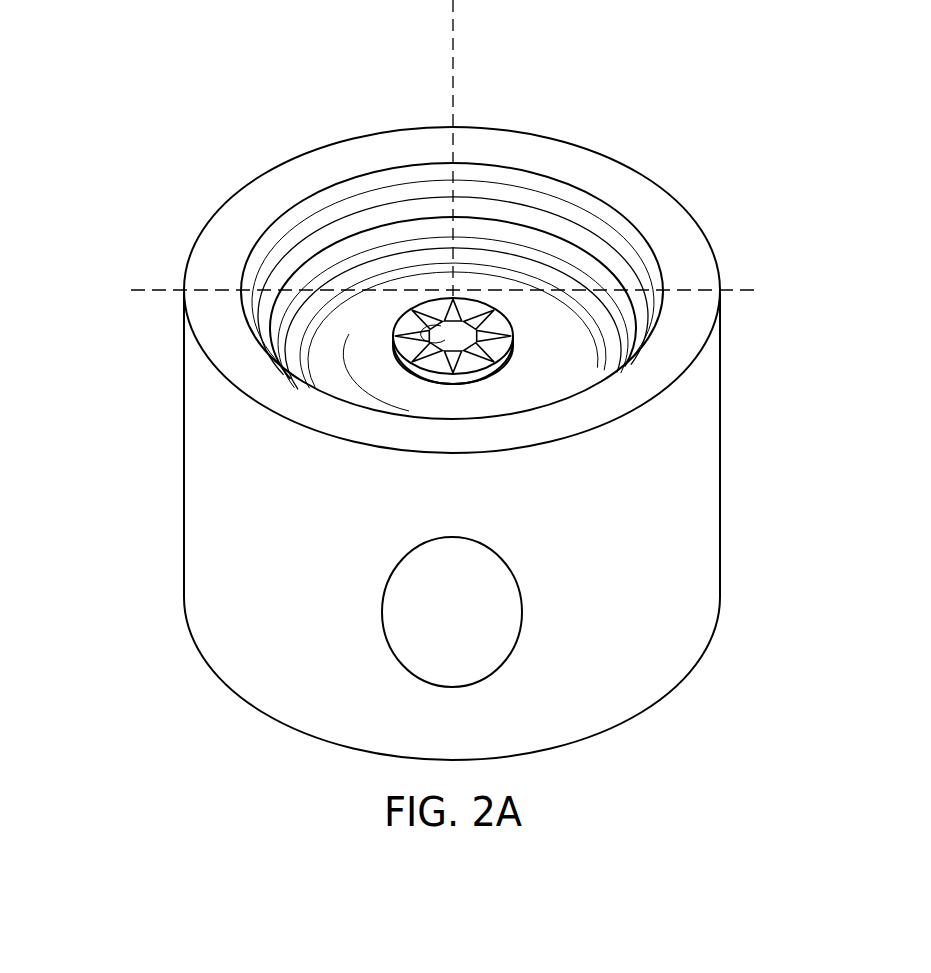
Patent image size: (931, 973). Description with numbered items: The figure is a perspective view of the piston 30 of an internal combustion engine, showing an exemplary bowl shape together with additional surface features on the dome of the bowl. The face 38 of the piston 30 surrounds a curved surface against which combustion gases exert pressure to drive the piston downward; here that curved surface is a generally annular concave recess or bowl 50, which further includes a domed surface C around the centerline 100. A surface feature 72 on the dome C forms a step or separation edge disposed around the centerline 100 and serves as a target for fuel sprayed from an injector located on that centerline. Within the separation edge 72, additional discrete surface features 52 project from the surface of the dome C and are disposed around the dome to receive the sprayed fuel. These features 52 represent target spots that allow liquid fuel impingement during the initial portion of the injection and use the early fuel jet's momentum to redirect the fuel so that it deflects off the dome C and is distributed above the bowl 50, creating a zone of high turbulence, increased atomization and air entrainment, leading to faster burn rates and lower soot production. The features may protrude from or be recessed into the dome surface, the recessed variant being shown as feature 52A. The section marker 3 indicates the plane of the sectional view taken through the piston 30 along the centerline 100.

The piston 30 is at (146, 349).
The face 38 is at (464, 156).
The bowl 50 is at (401, 198).
The surface feature 52 is at (511, 323).
The feature 52A is at (416, 313).
The surface feature 72 is at (490, 378).
The dome C is at (516, 357).
The centerline 100 is at (456, 14).
The section line 3- 3 is at (131, 290).